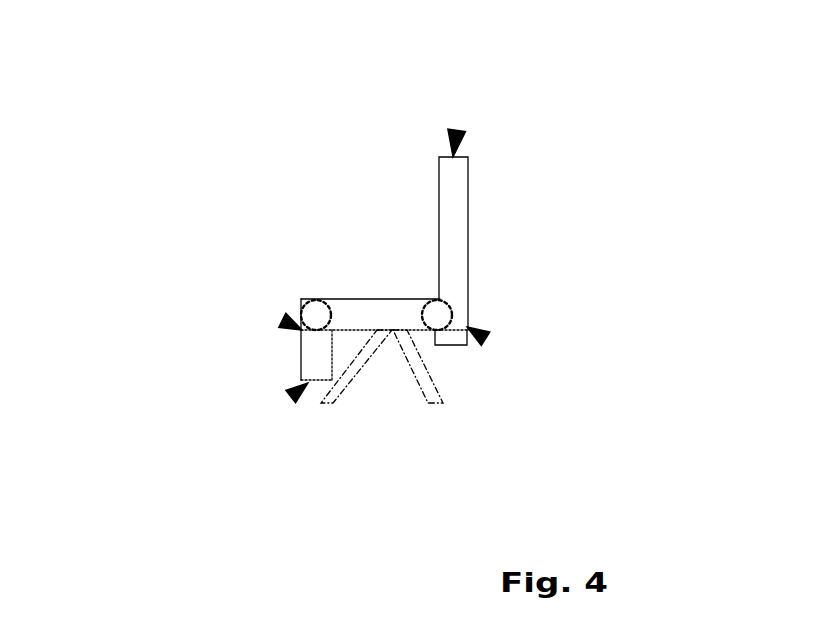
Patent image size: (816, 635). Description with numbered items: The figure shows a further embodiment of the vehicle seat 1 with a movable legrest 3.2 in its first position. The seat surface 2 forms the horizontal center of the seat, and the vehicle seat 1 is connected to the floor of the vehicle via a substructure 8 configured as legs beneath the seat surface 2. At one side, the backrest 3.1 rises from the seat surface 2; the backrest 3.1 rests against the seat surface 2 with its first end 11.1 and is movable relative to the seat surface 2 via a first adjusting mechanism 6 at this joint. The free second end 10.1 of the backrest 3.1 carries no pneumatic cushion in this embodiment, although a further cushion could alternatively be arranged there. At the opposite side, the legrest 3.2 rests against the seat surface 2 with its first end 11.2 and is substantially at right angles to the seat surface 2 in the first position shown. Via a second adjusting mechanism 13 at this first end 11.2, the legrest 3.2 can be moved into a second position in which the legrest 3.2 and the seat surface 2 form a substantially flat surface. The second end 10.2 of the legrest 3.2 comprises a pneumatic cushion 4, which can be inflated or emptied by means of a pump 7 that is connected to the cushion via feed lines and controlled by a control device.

The vehicle seat 1 is at (214, 93).
The seat surface 2 is at (357, 298).
The backrest 3.1 is at (458, 198).
The legrest 3.2 is at (302, 343).
The pneumatic cushion 4 is at (302, 382).
The first adjusting mechanism 6 is at (443, 317).
The pump 7 is at (452, 345).
The substructure 8 is at (340, 387).
The second end of the backrest 10.1 is at (457, 130).
The second end of the legrest 10.2 is at (291, 397).
The first end of the backrest 11.1 is at (486, 339).
The first end of the legrest 11.2 is at (282, 320).
The second adjusting mechanism 13 is at (312, 316).